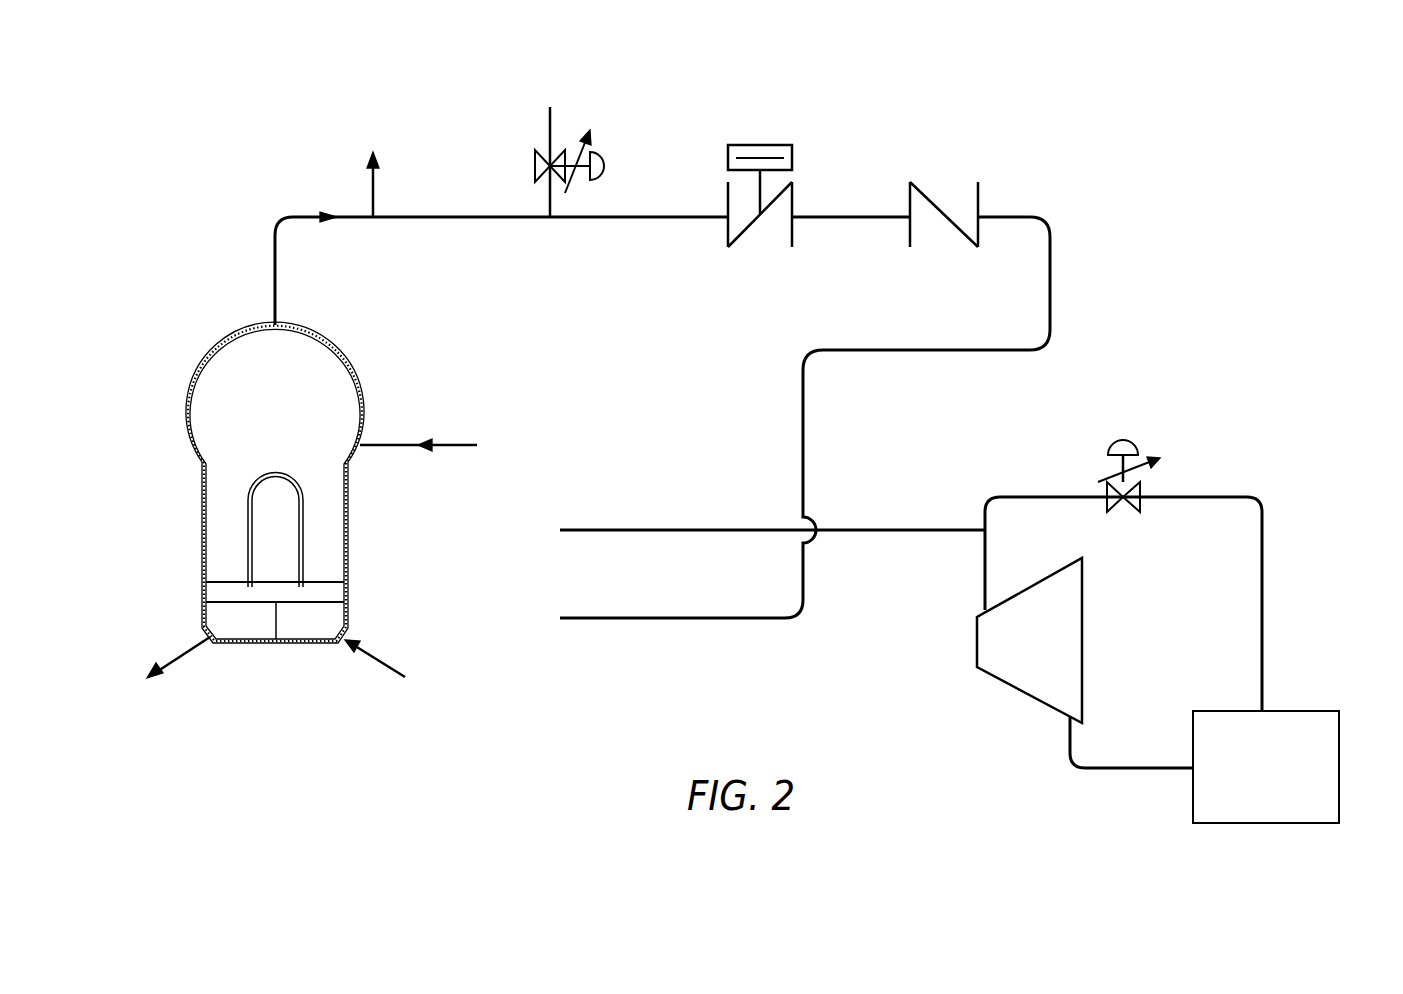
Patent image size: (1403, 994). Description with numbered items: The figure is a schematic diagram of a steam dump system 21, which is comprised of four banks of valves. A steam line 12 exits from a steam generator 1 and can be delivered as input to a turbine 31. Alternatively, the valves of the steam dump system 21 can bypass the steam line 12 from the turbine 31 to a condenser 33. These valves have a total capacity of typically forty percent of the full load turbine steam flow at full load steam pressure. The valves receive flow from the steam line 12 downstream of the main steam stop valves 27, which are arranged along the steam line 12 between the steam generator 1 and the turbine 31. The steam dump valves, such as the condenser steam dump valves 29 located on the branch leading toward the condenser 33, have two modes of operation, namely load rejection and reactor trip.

The steam generator 1 is at (185, 430).
The steam line 12 is at (273, 277).
The steam dump system 21 is at (222, 134).
The main steam stop valves 27 is at (727, 195).
The condenser steam dump valves 29 is at (1105, 478).
The turbine 31 is at (1083, 603).
The condenser 33 is at (1228, 710).